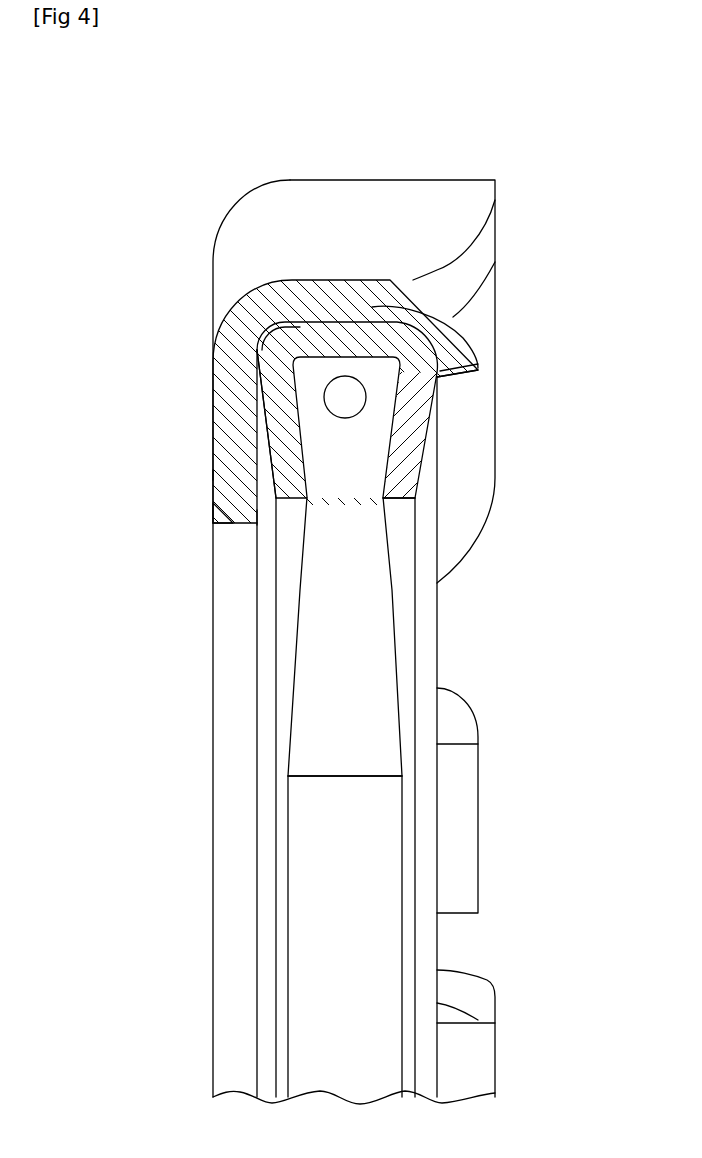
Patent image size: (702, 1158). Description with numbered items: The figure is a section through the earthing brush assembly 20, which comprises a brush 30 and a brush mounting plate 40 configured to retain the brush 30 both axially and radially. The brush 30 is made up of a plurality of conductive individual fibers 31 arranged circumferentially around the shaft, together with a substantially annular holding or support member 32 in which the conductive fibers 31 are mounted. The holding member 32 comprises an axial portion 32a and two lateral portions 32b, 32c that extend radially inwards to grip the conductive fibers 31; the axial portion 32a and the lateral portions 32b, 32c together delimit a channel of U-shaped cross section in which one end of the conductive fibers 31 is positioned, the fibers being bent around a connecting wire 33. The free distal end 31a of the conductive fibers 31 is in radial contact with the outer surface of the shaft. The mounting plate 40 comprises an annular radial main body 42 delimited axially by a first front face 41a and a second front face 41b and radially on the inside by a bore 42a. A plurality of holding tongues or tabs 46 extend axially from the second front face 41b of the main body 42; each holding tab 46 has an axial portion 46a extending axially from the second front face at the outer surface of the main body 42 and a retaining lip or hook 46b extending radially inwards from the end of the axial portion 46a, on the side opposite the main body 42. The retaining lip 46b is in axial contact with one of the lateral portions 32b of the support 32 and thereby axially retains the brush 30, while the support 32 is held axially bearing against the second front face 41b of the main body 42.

The earthing brush assembly 20 is at (536, 125).
The brush 30 is at (442, 450).
The conductive individual fibers 31 is at (372, 697).
The free distal end 31a is at (372, 778).
The holding or support member 32 is at (442, 393).
The axial portion 32a is at (453, 318).
The lateral portion 32b is at (400, 482).
The lateral portion 32c is at (284, 462).
The connecting wire 33 is at (345, 397).
The brush mounting plate 40 is at (205, 449).
The first front face 41a is at (225, 473).
The second front face 41b is at (255, 507).
The annular radial main body 42 is at (213, 503).
The bore 42a is at (232, 524).
The holding tongue or tab 46 is at (352, 272).
The axial portion 46a is at (372, 292).
The retaining lip or hook 46b is at (456, 360).